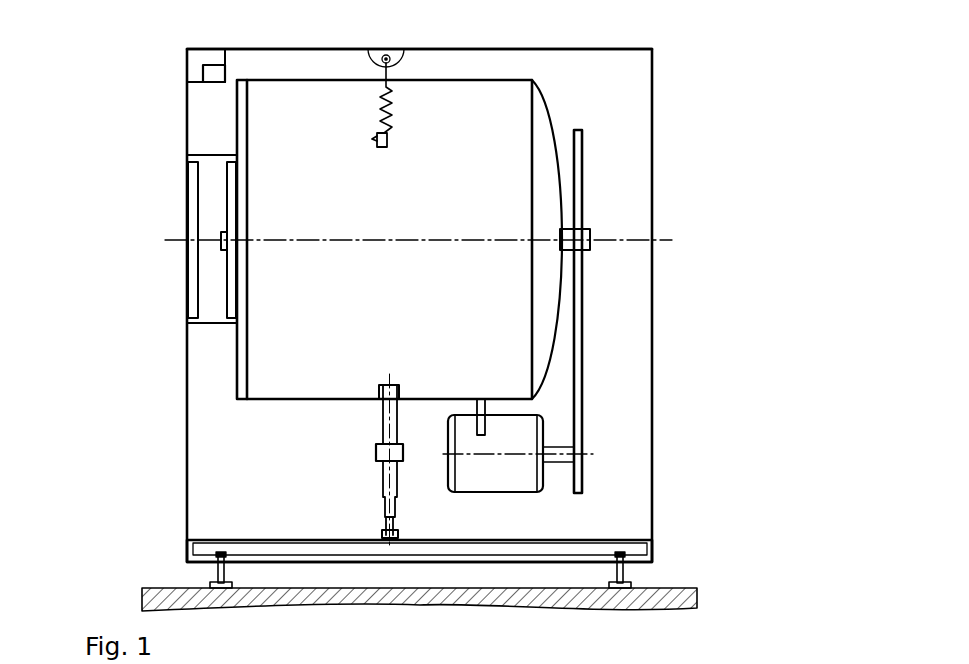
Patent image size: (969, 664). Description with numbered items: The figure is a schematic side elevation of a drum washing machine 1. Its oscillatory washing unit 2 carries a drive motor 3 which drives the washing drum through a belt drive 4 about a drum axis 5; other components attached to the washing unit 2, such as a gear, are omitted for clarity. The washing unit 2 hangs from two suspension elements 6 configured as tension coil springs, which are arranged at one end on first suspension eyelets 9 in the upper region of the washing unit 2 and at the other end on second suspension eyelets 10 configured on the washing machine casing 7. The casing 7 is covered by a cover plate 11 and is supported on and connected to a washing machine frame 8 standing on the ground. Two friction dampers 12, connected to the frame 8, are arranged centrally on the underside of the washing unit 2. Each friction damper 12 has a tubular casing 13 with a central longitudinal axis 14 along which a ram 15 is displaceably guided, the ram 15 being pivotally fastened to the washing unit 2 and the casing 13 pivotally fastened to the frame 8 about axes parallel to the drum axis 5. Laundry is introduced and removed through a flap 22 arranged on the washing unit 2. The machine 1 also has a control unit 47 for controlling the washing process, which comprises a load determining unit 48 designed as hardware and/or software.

The drum washing machine 1 is at (458, 0).
The oscillatory washing unit 2 is at (566, 147).
The drive motor 3 is at (527, 472).
The belt drive 4 is at (577, 379).
The drum axis 5 is at (207, 243).
The suspension elements 6 is at (380, 116).
The washing machine casing 7 is at (187, 345).
The washing machine frame 8 is at (187, 556).
The first suspension eyelets 9 is at (375, 142).
The second suspension eyelets 10 is at (383, 54).
The cover plate 11 is at (268, 48).
The friction dampers 12 is at (371, 475).
The tubular casing 13 is at (383, 502).
The central longitudinal axis 14 is at (383, 433).
The ram 15 is at (383, 412).
The flap 22 is at (190, 197).
The control unit 47 is at (193, 60).
The load determining unit 48 is at (214, 64).